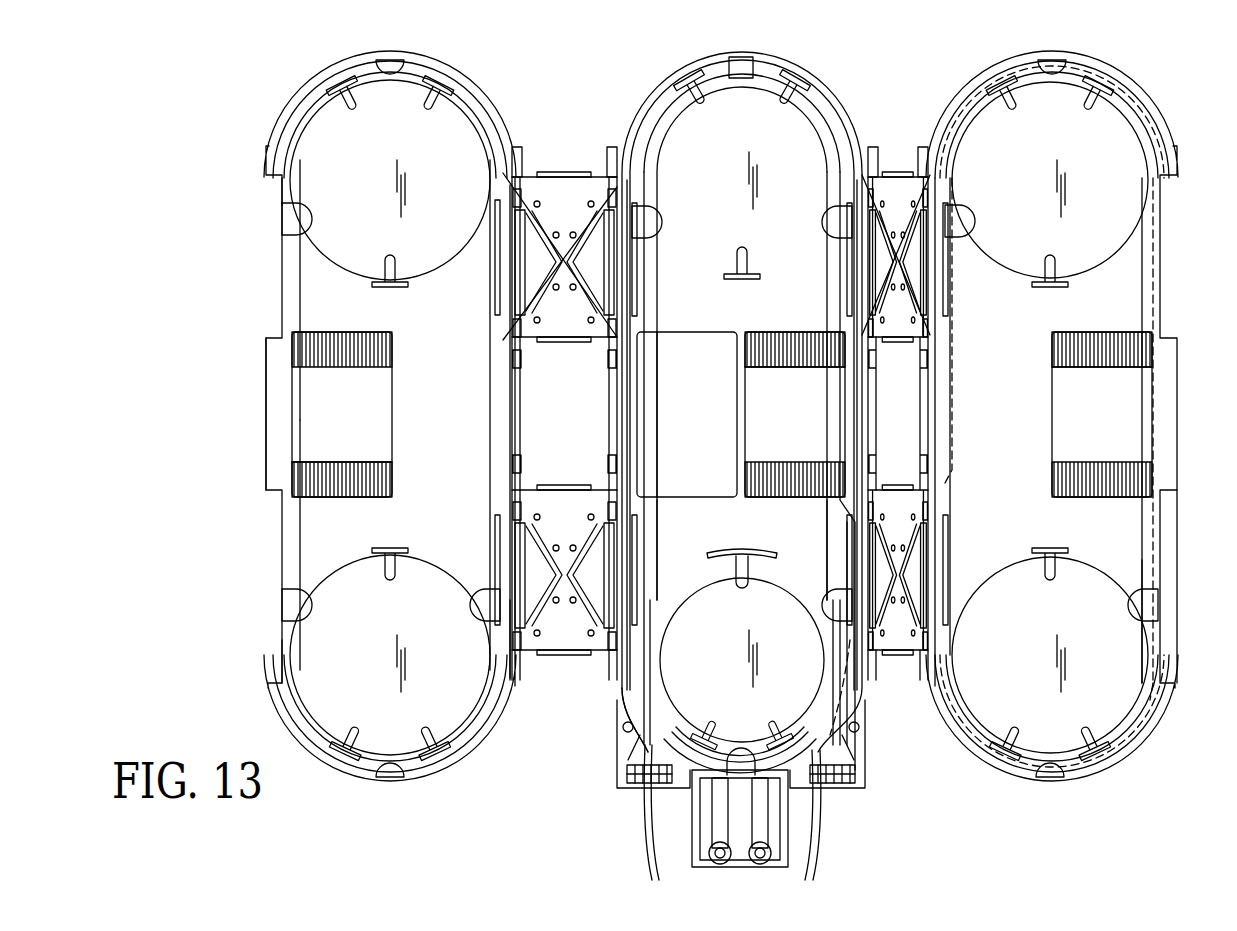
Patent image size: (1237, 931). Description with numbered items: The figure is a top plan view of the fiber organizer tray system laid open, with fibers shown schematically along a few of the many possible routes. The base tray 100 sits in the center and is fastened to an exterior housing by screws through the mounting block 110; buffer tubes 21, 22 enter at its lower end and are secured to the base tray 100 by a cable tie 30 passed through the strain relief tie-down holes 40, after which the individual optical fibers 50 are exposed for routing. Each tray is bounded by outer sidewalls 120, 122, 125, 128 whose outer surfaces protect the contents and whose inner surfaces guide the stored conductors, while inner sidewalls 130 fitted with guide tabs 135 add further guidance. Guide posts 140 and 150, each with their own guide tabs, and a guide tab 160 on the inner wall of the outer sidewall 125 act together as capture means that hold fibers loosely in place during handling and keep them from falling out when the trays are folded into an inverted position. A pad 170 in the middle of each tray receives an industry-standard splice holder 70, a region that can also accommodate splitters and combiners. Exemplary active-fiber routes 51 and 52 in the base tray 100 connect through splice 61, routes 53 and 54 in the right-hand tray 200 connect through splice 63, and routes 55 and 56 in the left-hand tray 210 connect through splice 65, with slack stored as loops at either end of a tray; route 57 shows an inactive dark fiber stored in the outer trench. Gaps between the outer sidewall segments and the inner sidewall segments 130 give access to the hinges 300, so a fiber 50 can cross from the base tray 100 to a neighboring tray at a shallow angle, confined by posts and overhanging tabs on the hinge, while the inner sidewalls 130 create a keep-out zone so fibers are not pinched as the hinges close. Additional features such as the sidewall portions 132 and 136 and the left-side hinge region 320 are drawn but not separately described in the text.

The buffer tube 21 is at (648, 832).
The buffer tube 22 is at (820, 836).
The cable tie 30 is at (830, 782).
The strain relief tie-down hole 40 is at (860, 770).
The optical fiber 50 is at (655, 668).
The routing path 51 is at (714, 98).
The routing path 52 is at (832, 503).
The routing path 53 is at (836, 552).
The routing path 54 is at (658, 122).
The routing path 55 is at (500, 172).
The routing path 56 is at (303, 525).
The routing path 57 is at (850, 668).
The splice 61 is at (826, 420).
The splice 63 is at (1140, 420).
The splice 65 is at (300, 412).
The splice holder 70 is at (392, 480).
The base tray 100 is at (628, 78).
The mounting block 110 is at (788, 843).
The outer sidewall 120 is at (278, 668).
The outer sidewall 122 is at (605, 410).
The outer sidewall 125 is at (430, 60).
The outer sidewall 128 is at (362, 775).
The inner sidewall 130 is at (497, 520).
The outer side wall 132 is at (266, 340).
The guide tab 135 is at (470, 605).
The side lug 136 is at (312, 220).
The guide post 140 is at (397, 285).
The guide post 150 is at (343, 103).
The guide tab 160 is at (390, 73).
The pad 170 is at (676, 335).
The right-hand tray 200 is at (945, 78).
The left-hand tray 210 is at (285, 78).
The hinge 300 is at (893, 182).
The connector 320 is at (558, 180).